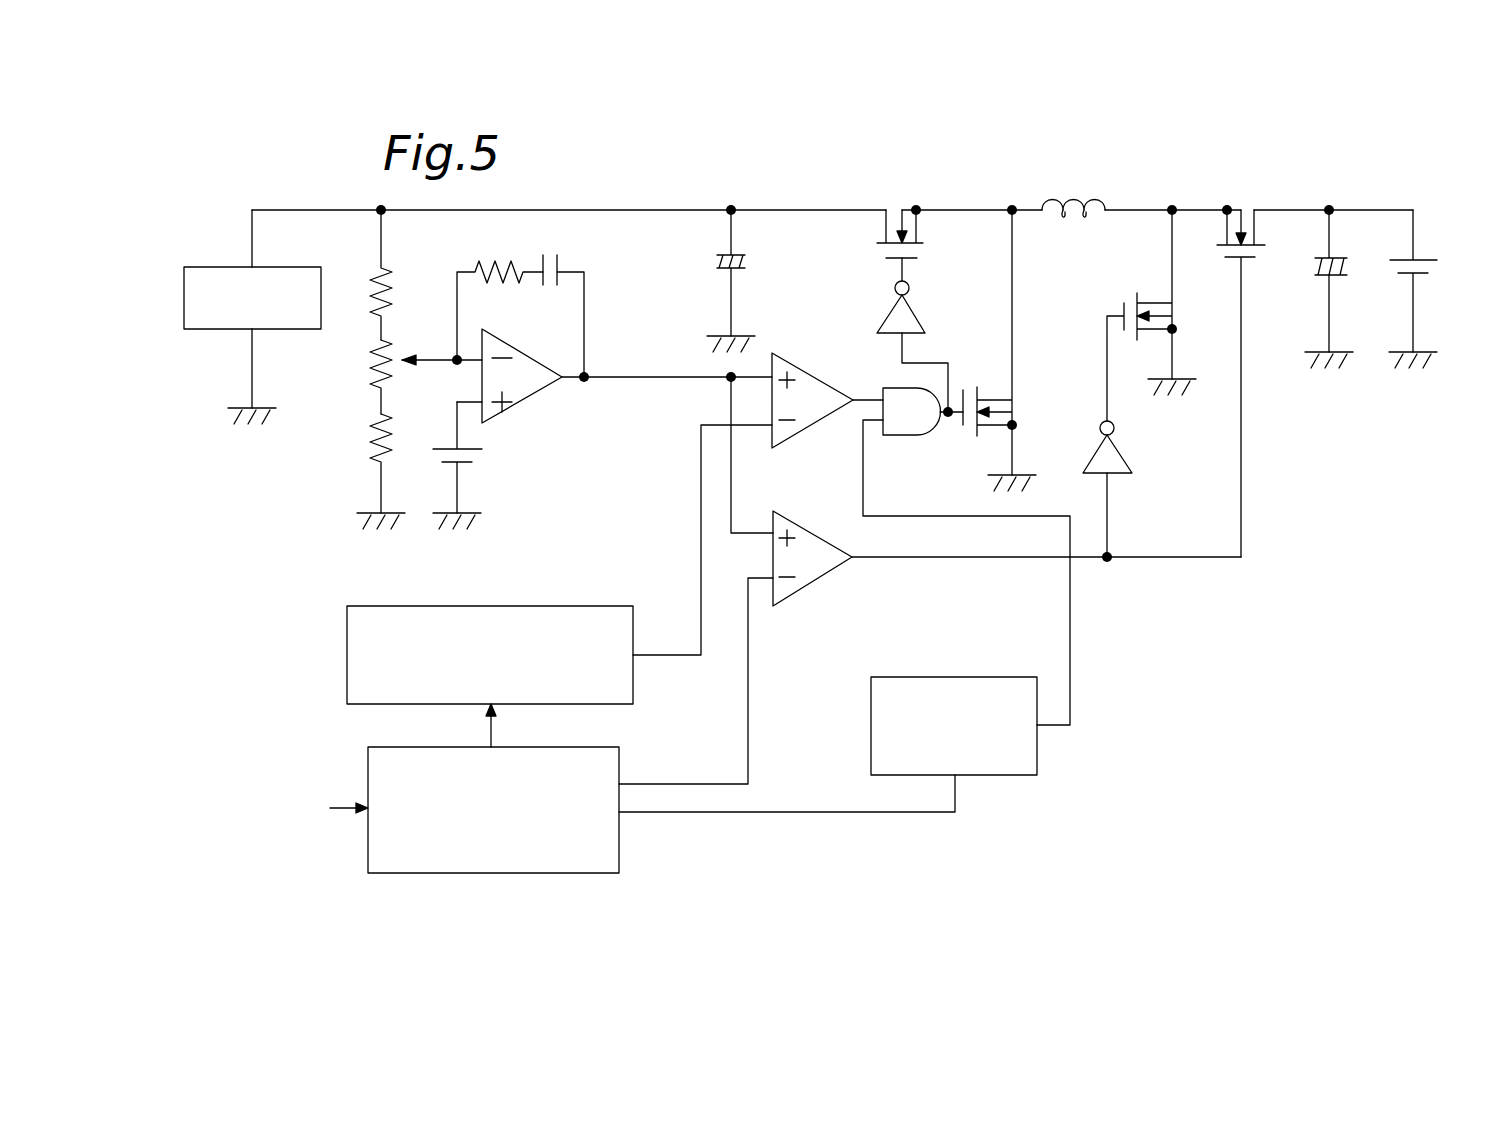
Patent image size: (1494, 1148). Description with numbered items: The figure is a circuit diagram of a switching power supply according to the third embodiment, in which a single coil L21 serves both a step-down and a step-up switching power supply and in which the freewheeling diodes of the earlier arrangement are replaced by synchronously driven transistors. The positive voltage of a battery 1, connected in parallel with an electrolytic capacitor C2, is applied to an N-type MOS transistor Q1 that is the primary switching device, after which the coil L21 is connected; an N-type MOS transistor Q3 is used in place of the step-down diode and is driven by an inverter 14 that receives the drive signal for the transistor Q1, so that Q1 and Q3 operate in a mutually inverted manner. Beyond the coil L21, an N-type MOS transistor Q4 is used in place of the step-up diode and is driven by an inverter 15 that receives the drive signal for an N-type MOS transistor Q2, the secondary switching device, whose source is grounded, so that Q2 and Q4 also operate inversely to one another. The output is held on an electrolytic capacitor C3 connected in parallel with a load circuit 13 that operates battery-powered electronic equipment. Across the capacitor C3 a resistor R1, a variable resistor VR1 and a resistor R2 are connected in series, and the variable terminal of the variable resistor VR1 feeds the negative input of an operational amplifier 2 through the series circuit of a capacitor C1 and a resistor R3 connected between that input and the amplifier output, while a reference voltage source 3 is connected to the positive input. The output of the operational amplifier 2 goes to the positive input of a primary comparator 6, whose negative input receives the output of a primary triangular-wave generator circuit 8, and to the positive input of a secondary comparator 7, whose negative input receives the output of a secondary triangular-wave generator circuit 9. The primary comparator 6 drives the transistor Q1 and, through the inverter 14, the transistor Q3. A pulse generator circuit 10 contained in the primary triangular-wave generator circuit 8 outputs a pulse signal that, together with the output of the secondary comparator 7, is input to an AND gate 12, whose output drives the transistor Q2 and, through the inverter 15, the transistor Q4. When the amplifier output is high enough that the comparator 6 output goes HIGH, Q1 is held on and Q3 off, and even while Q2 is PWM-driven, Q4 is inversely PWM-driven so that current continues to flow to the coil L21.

The load circuit 13 is at (208, 266).
The resistor R1 is at (370, 313).
The variable resistor VR1 is at (370, 387).
The resistor R2 is at (370, 445).
The resistor R3 is at (503, 258).
The capacitor C1 is at (562, 265).
The operational amplifier 2 is at (510, 340).
The reference voltage source 3 is at (480, 458).
The electrolytic capacitor C3 is at (748, 260).
The secondary comparator 7 is at (813, 373).
The primary comparator 6 is at (810, 530).
The inverter 15 is at (887, 315).
The N-type MOS transistor Q4 is at (927, 249).
The N-type MOS transistor Q2 is at (967, 390).
The AND gate 12 is at (913, 437).
The coil L21 is at (1095, 193).
The N-type MOS transistor Q3 is at (1132, 294).
The N-type MOS transistor Q1 is at (1222, 255).
The inverter 14 is at (1122, 448).
The electrolytic capacitor C2 is at (1352, 260).
The battery 1 is at (1433, 253).
The secondary triangular-wave generator circuit 9 is at (487, 605).
The primary triangular-wave generator circuit 8 is at (582, 877).
The pulse generator circuit 10 is at (1002, 675).